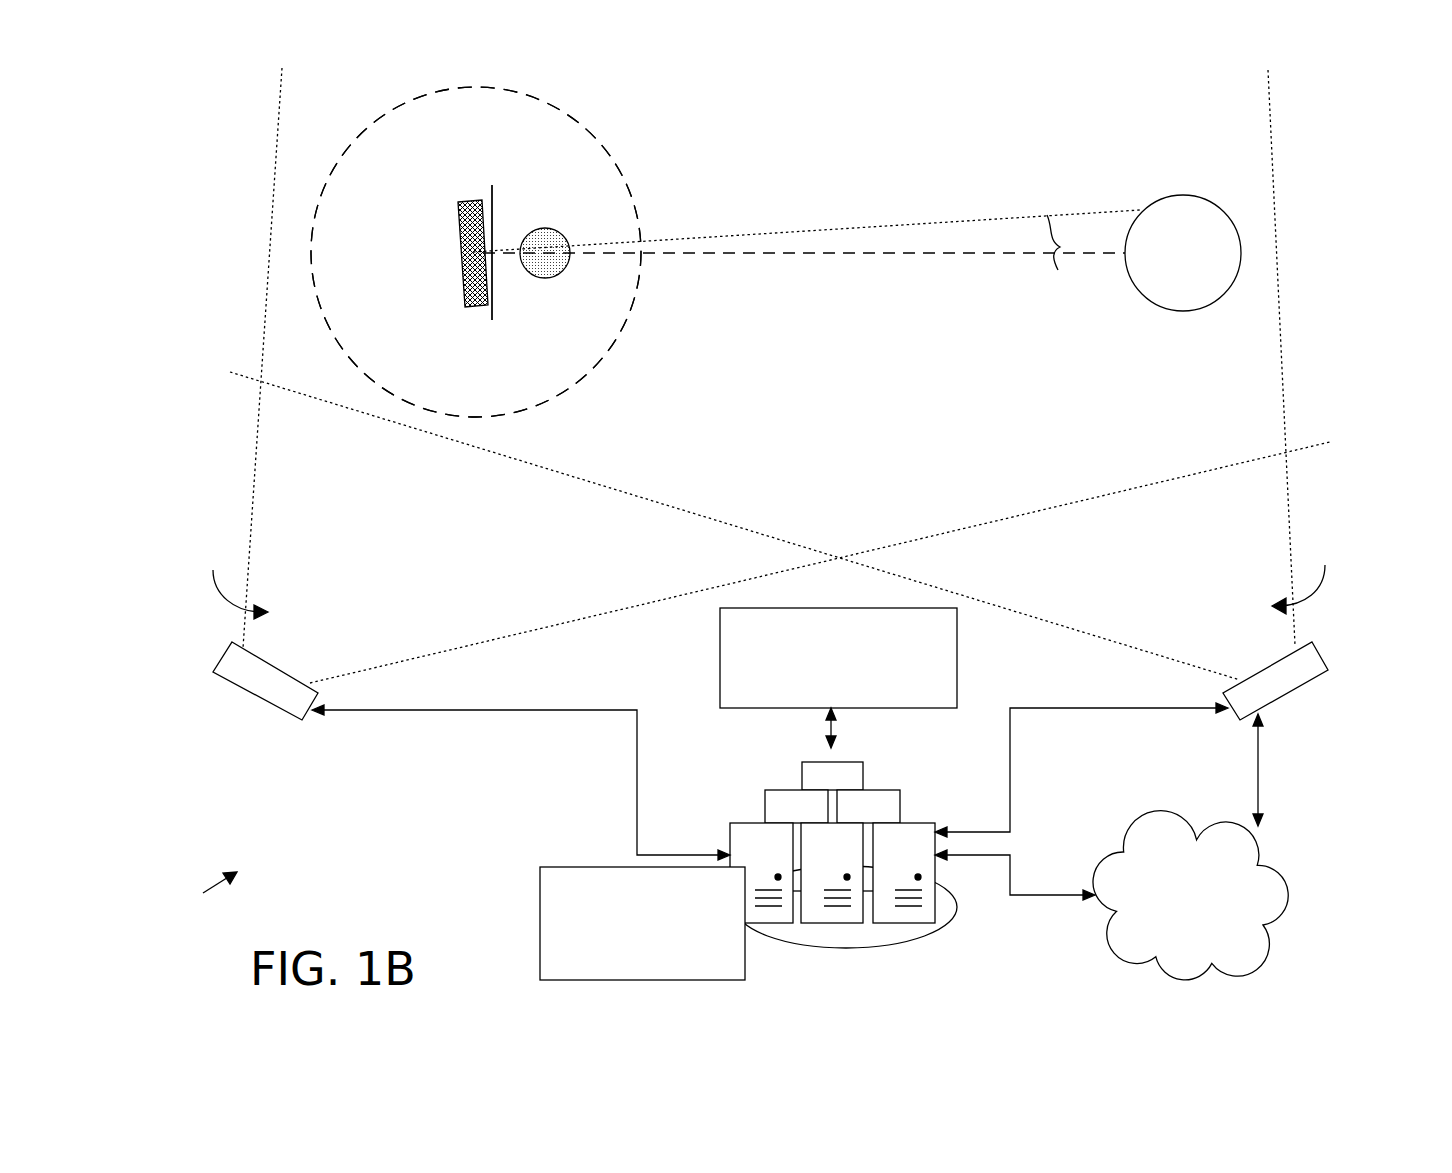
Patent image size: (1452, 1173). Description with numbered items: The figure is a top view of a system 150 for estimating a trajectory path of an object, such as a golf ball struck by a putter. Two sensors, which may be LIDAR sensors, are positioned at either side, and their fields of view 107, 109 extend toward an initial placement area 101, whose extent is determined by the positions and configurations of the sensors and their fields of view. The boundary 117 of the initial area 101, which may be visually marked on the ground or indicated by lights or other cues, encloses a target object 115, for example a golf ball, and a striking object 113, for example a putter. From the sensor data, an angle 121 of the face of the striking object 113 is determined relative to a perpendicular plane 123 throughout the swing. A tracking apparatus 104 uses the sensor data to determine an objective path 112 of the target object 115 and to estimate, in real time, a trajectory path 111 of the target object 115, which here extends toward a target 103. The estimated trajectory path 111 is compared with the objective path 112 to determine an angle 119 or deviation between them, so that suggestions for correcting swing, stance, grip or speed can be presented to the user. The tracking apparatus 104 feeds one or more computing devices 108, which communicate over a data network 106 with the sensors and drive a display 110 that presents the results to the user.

The initial placement area 101 is at (455, 137).
The target object 103 is at (1163, 229).
The tracking apparatus 104 is at (624, 960).
The data network 106 is at (1173, 917).
The field of view 107 is at (233, 581).
The computing device 108 is at (802, 766).
The field of view 109 is at (1311, 576).
The display 110 is at (820, 681).
The estimated trajectory path 111 is at (903, 226).
The objective path 112 is at (905, 256).
The striking object 113 is at (465, 218).
The target object 115 is at (562, 243).
The boundary 117 is at (621, 185).
The angle 119 is at (1064, 257).
The angle of the face of the striking object 121 is at (495, 265).
The perpendicular plane 123 is at (492, 320).
The system 150 is at (211, 897).